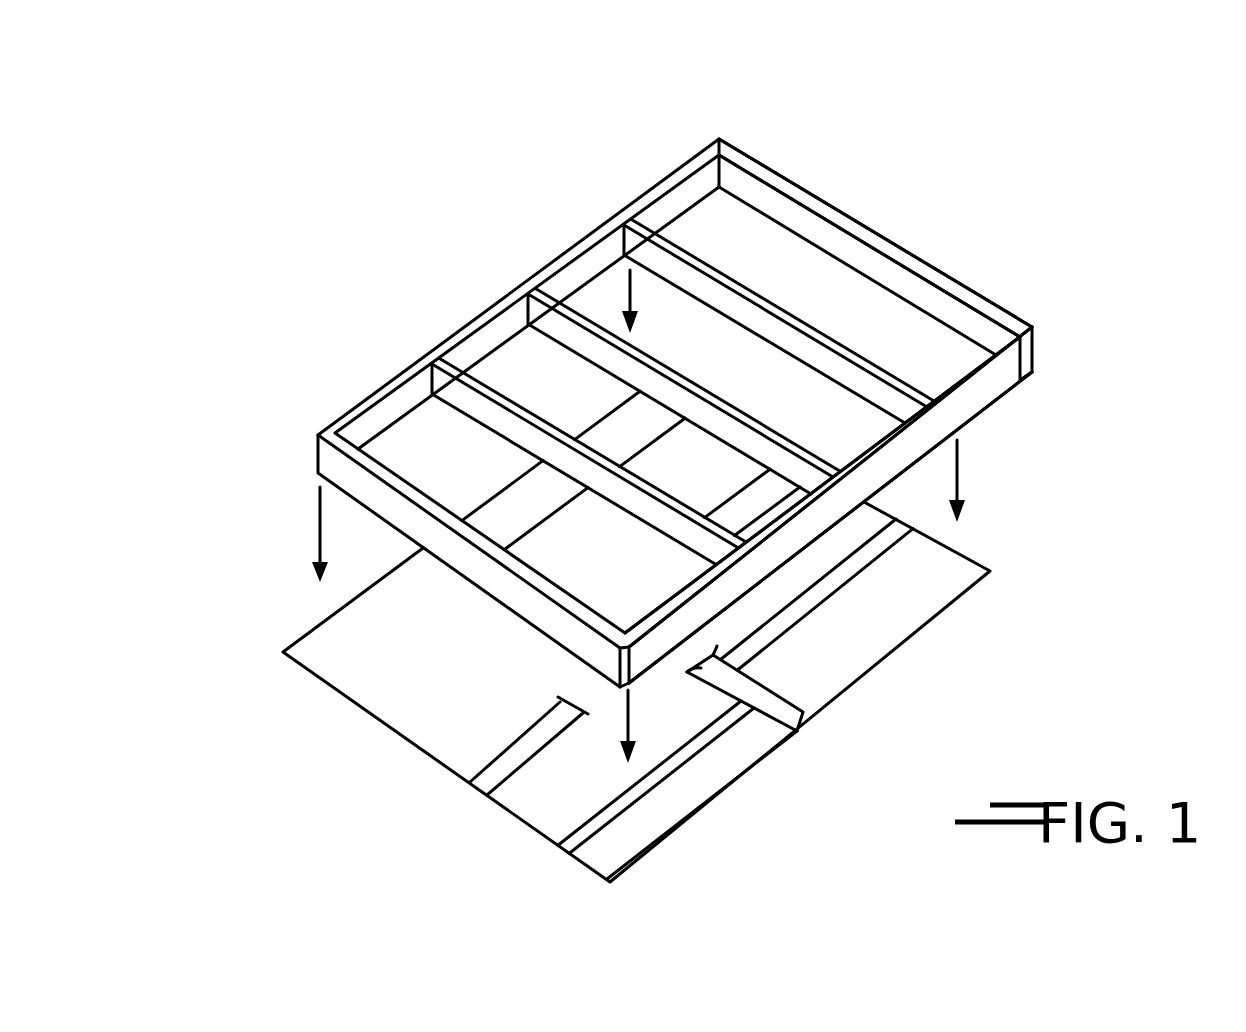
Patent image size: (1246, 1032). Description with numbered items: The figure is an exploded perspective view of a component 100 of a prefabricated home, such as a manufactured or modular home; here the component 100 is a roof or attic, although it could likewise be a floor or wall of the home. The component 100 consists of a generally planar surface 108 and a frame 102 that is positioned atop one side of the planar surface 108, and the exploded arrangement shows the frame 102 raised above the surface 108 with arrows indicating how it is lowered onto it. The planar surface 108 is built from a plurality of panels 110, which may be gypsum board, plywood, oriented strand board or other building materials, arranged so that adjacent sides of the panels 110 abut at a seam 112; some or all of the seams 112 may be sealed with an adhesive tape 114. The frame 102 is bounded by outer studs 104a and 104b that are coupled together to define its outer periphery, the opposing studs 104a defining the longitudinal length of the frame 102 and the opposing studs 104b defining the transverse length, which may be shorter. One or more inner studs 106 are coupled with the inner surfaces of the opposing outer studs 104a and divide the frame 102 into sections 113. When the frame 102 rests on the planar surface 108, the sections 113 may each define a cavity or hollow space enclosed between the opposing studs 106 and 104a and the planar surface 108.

The component 100 is at (701, 482).
The frame 102 is at (738, 384).
The outer studs 104a is at (993, 375).
The outer studs 104b is at (833, 207).
The inner studs 106 is at (672, 244).
The planar surface 108 is at (669, 682).
The panels 110 is at (883, 617).
The seam 112 is at (370, 712).
The sections 113 is at (598, 302).
The adhesive tape 114 is at (795, 727).